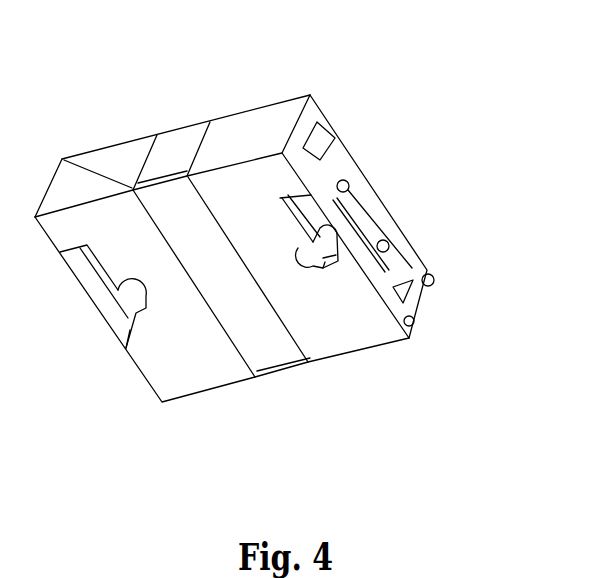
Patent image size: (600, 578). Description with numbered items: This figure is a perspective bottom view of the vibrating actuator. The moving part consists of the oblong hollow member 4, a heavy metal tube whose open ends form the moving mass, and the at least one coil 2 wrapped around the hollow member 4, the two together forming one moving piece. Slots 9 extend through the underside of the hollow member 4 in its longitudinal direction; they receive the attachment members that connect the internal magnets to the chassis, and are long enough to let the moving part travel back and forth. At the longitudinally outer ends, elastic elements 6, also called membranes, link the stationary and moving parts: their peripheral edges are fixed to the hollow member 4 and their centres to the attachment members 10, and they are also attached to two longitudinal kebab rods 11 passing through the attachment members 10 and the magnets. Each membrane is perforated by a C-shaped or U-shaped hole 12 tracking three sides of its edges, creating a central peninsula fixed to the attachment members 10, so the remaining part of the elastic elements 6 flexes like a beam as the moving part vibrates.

The coil 2 is at (162, 172).
The hollow member 4 is at (68, 197).
The elastic element 6 is at (87, 278).
The slot 9 is at (130, 327).
The attachment member 10 is at (307, 207).
The kebab rod 11 is at (352, 183).
The C-shaped or U-shaped hole 12 is at (362, 230).